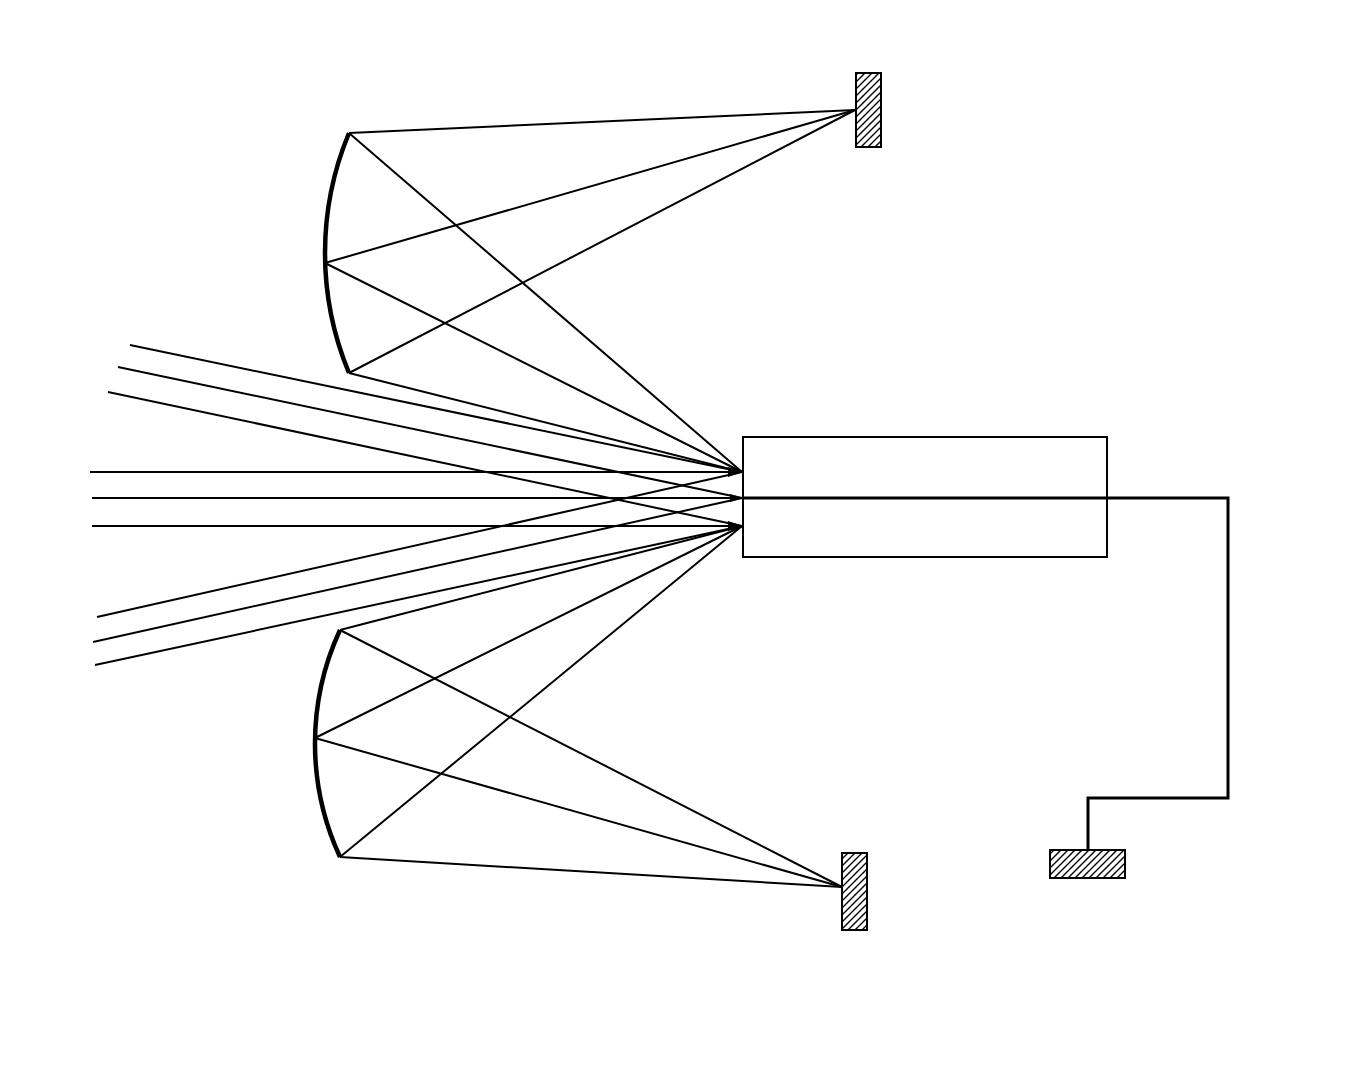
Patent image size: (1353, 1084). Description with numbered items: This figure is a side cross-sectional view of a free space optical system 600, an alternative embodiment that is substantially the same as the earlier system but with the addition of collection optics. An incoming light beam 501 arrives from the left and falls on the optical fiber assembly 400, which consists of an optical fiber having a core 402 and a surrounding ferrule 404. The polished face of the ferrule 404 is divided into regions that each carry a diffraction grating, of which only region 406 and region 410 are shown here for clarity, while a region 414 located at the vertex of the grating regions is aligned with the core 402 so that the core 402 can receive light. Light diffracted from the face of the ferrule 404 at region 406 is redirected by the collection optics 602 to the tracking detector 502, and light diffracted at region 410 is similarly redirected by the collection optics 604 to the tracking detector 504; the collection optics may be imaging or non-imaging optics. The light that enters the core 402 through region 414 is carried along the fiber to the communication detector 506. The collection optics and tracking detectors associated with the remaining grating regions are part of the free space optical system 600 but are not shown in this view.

The free space optical system 600 is at (1118, 158).
The incoming light beam 501 is at (200, 300).
The collection optics 602 is at (329, 214).
The collection optics 604 is at (328, 823).
The detector 502 is at (856, 148).
The detector 504 is at (866, 849).
The communication detector 506 is at (1052, 877).
The optical fiber assembly 400 is at (747, 345).
The core 402 is at (906, 502).
The ferrule 404 is at (912, 558).
The region 406 is at (743, 440).
The region 410 is at (744, 558).
The region 414 is at (745, 497).